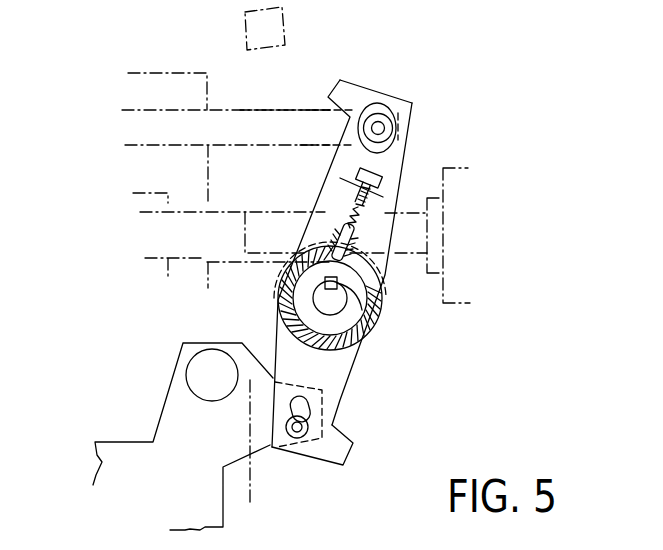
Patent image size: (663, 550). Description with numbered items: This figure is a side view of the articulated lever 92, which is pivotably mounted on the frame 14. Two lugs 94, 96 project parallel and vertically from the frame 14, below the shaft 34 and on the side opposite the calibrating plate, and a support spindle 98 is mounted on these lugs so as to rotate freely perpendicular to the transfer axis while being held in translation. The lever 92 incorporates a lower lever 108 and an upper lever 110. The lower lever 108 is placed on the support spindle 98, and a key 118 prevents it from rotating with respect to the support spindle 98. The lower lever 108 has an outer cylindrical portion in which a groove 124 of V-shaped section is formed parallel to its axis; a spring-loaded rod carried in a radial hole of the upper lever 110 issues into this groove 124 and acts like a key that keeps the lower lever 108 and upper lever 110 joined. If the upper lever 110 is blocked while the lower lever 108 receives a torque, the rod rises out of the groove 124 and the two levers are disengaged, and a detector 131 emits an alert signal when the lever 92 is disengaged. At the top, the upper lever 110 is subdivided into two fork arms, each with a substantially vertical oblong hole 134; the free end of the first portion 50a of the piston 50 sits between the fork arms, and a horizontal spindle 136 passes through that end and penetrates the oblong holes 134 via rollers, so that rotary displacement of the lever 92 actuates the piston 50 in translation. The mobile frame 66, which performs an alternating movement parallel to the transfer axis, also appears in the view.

The frame 14 is at (227, 158).
The piston 50 is at (227, 110).
The first portion of piston 50a is at (277, 118).
The detector 131 is at (273, 30).
The oblong hole 134 is at (397, 120).
The horizontal spindle 136 is at (390, 127).
The lever 92 is at (410, 127).
The upper lever 110 is at (405, 160).
The lower lever 108 is at (346, 367).
The groove 124 is at (340, 267).
The shaft 34 is at (228, 213).
The support spindle 98 is at (318, 306).
The key 118 is at (340, 322).
The frame 66 is at (158, 433).
The lug 94 is at (222, 376).
The lug 96 is at (295, 357).